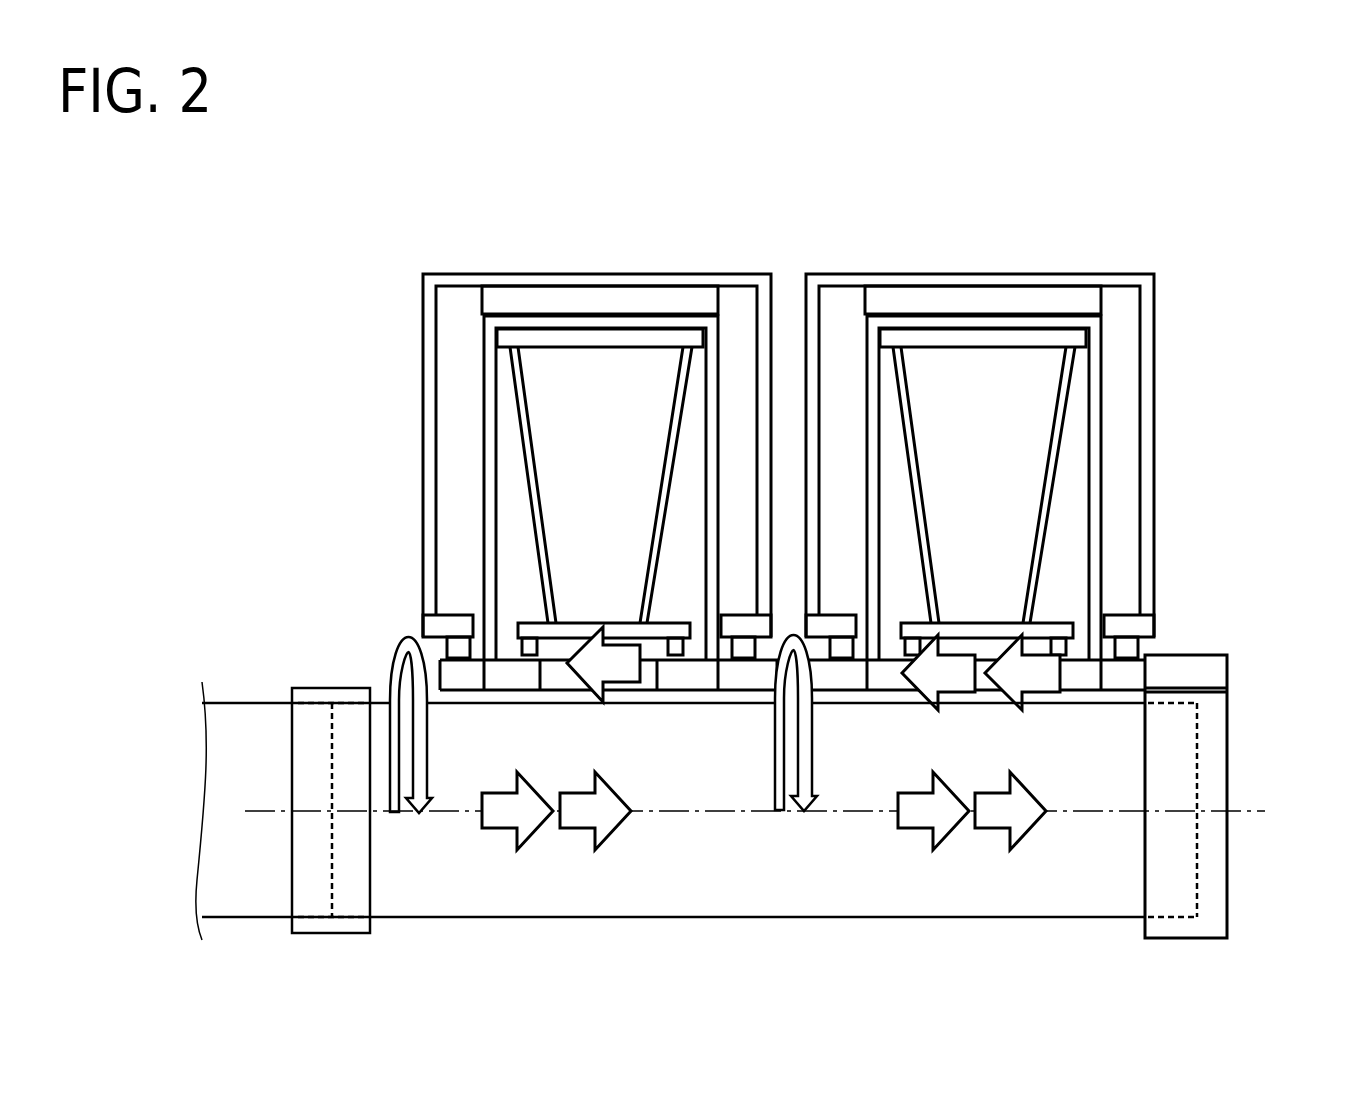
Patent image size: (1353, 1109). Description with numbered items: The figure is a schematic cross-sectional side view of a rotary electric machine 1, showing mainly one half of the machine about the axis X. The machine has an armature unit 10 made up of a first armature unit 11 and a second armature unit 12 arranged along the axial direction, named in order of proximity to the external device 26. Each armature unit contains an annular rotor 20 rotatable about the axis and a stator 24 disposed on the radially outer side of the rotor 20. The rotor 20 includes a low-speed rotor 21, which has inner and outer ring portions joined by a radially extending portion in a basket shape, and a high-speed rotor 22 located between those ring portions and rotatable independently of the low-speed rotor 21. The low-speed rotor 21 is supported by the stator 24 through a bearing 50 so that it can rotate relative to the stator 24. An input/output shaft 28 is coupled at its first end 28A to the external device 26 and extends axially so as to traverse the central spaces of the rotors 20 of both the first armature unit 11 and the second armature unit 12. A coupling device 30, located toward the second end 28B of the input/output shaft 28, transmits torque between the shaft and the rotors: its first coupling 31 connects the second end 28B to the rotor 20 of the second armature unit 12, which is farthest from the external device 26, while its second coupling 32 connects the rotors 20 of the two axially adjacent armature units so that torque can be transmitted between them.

The rotary electric machine 1 is at (1290, 172).
The armature unit 10 is at (1012, 145).
The first armature unit 11 is at (527, 192).
The second armature unit 12 is at (914, 192).
The rotor 20 is at (702, 228).
The low-speed rotor 21 is at (597, 325).
The high-speed rotor 22 is at (648, 340).
The stator 24 is at (525, 298).
The external device 26 is at (233, 708).
The input/output shaft 28 is at (597, 912).
The first end 28A is at (337, 893).
The second end 28B is at (1195, 865).
The coupling device 30 is at (871, 786).
The first coupling 31 is at (1212, 738).
The second coupling 32 is at (770, 683).
The bearing 50 is at (457, 648).